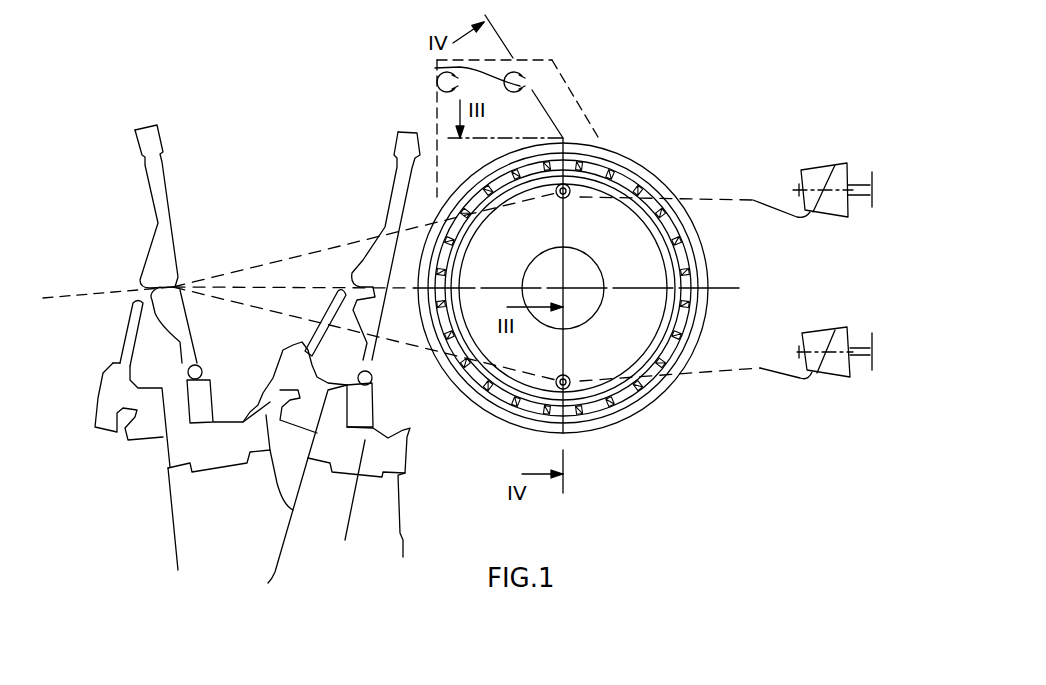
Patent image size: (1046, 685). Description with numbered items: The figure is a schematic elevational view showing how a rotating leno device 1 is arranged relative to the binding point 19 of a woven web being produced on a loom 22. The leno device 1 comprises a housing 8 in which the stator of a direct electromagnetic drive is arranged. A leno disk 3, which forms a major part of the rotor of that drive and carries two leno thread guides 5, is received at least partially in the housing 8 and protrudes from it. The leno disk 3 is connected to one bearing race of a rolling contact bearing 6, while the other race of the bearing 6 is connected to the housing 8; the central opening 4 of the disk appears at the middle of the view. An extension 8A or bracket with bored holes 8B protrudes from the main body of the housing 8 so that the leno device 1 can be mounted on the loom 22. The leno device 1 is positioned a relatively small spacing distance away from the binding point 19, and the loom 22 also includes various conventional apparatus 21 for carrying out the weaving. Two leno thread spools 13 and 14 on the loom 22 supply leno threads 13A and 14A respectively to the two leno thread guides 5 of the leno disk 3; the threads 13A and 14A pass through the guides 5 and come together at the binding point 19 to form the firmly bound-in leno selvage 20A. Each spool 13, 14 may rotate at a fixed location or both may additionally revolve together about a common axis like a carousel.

The rotating leno device 1 is at (610, 109).
The leno disk 3 is at (533, 358).
The central bore 4 is at (565, 288).
The leno thread guides 5 is at (570, 186).
The rolling contact bearing 6 is at (478, 392).
The housing 8 is at (661, 190).
The extension 8A is at (553, 93).
The bored holes 8B is at (428, 75).
The leno thread spool 13 is at (838, 173).
The leno thread 13A is at (780, 210).
The leno thread spool 14 is at (835, 368).
The leno thread 14A is at (768, 373).
The binding point 19 is at (177, 280).
The leno selvage 20A is at (72, 293).
The conventional apparatus 21 is at (131, 473).
The loom 22 is at (200, 131).